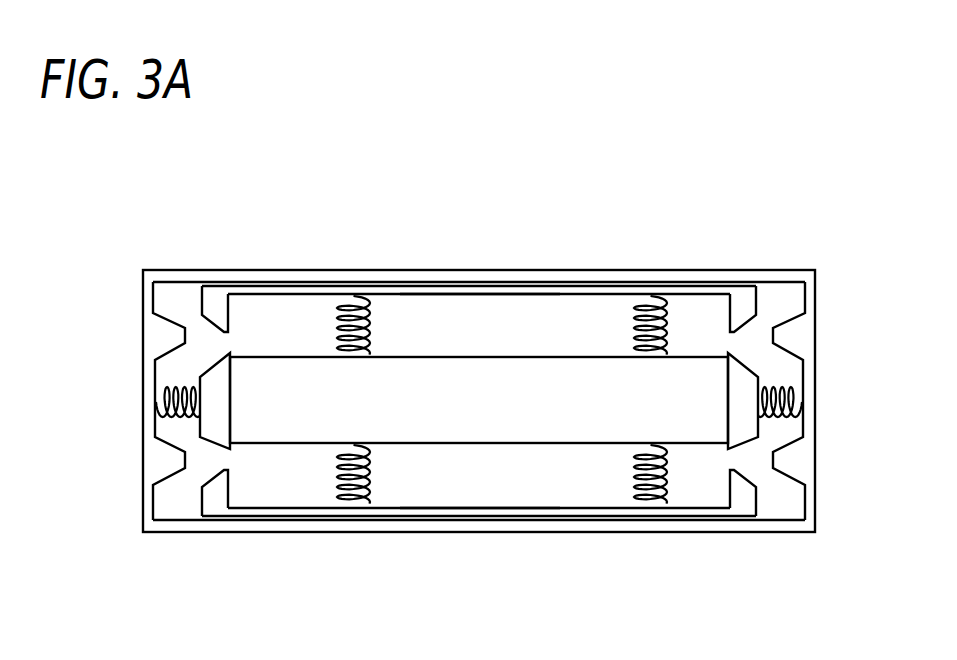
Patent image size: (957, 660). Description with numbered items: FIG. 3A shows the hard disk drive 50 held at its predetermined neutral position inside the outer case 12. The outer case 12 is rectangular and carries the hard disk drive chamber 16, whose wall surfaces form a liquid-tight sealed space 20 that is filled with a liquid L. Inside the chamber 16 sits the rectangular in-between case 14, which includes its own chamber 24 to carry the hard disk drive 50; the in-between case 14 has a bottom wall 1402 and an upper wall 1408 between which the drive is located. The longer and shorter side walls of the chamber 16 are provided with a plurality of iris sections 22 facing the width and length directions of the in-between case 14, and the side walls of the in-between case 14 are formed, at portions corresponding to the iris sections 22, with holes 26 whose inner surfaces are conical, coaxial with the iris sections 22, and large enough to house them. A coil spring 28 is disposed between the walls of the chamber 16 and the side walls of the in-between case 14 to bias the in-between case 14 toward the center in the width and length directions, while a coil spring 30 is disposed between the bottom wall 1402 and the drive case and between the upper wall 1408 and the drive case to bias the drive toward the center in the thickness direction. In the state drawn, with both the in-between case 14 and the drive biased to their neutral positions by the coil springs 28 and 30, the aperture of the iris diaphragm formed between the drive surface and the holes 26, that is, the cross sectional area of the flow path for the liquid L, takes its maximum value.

The outer case 12 is at (143, 329).
The in-between case 14 is at (200, 292).
The hard disk drive chamber 16 is at (777, 507).
The liquid-tight sealed space 20 is at (572, 489).
The iris section 22 is at (167, 314).
The chamber 24 is at (592, 313).
The hole 26 is at (215, 322).
The coil spring 28 is at (178, 446).
The coil spring 30 is at (368, 320).
The hard disk drive 50 is at (527, 357).
The bottom wall 1402 is at (437, 506).
The upper wall 1408 is at (457, 297).
The liquid L is at (495, 485).